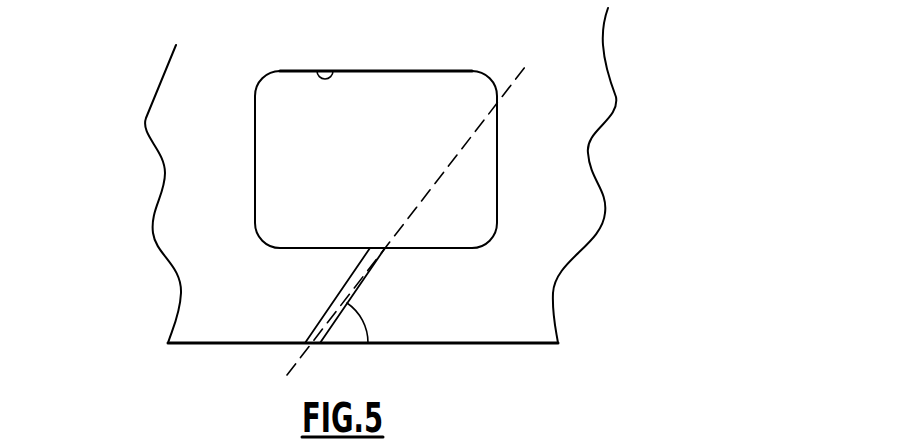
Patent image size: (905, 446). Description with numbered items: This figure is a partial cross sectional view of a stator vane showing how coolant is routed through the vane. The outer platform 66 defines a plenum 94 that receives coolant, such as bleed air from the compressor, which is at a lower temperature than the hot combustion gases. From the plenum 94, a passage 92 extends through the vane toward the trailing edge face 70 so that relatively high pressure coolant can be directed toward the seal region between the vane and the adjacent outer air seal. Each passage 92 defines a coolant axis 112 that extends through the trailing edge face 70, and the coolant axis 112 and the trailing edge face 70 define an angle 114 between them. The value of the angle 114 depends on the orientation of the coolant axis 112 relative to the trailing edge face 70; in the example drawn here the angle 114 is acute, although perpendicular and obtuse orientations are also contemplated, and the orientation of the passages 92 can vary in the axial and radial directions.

The outer platform 66 is at (132, 66).
The trailing edge face 70 is at (490, 344).
The plenum 94 is at (327, 80).
The passage 92 is at (372, 270).
The coolant axis 112 is at (480, 127).
The angle 114 is at (362, 318).